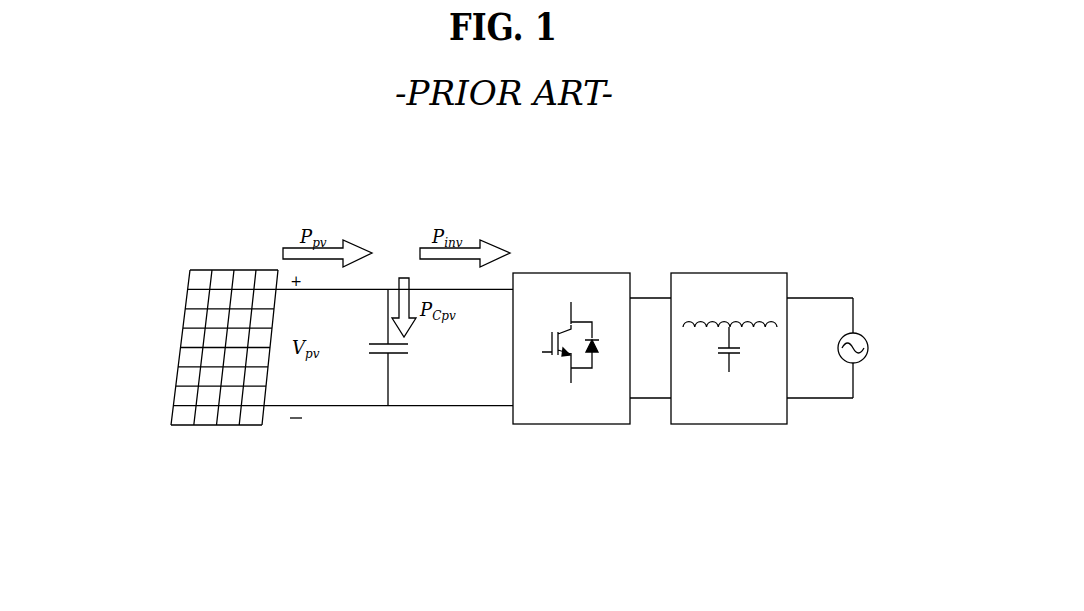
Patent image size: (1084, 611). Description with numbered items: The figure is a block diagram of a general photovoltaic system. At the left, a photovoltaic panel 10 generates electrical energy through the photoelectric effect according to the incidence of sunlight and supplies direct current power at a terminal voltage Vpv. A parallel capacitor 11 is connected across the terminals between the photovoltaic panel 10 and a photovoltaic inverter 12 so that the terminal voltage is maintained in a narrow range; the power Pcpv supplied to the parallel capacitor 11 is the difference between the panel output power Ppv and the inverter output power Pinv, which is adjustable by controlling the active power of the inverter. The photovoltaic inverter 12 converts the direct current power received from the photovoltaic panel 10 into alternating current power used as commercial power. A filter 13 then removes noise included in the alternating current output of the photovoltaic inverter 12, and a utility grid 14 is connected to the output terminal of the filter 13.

The photovoltaic panel 10 is at (231, 270).
The parallel capacitor 11 is at (371, 332).
The photovoltaic inverter 12 is at (571, 281).
The filter 13 is at (727, 284).
The utility grid 14 is at (869, 345).